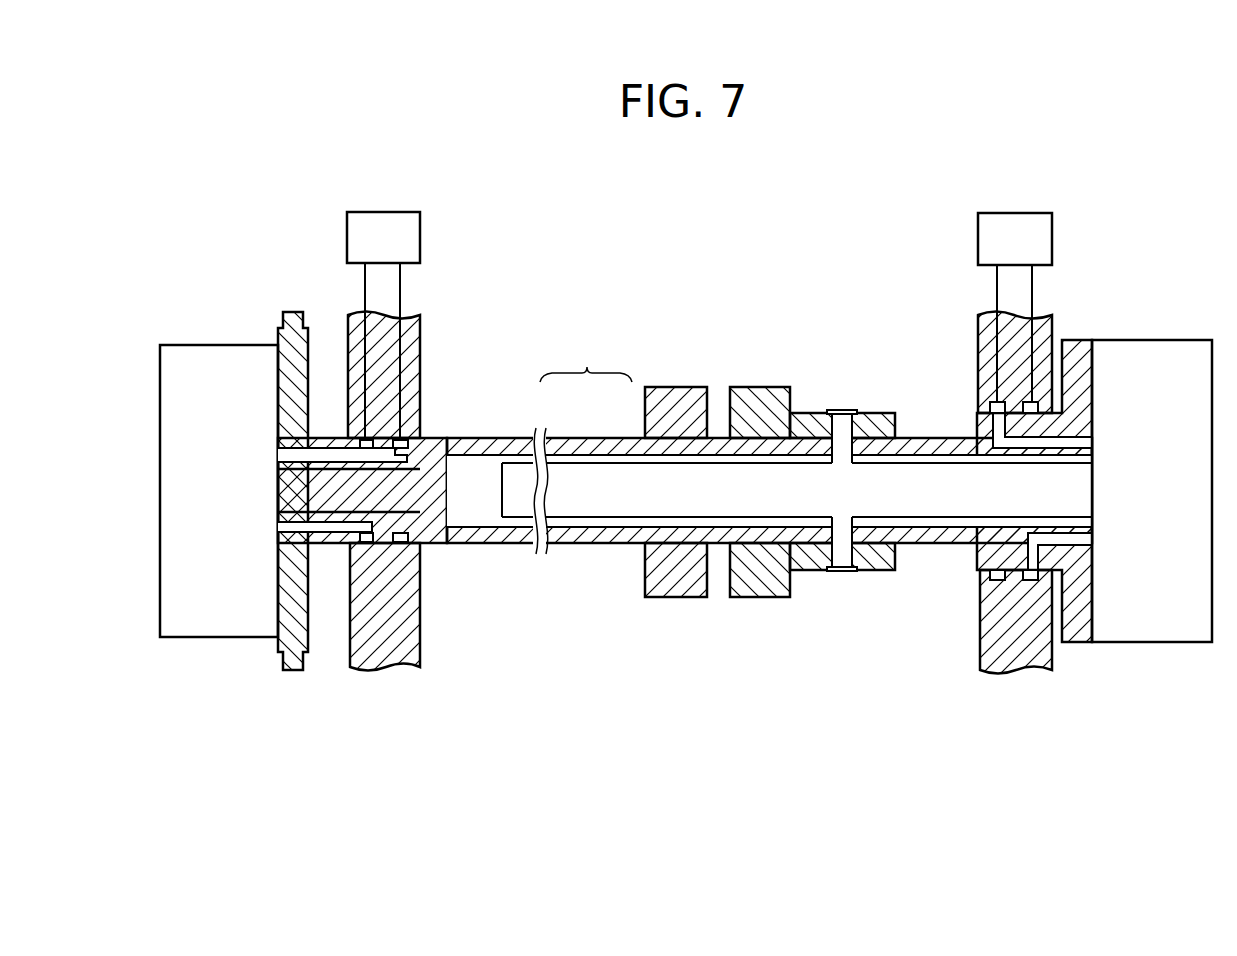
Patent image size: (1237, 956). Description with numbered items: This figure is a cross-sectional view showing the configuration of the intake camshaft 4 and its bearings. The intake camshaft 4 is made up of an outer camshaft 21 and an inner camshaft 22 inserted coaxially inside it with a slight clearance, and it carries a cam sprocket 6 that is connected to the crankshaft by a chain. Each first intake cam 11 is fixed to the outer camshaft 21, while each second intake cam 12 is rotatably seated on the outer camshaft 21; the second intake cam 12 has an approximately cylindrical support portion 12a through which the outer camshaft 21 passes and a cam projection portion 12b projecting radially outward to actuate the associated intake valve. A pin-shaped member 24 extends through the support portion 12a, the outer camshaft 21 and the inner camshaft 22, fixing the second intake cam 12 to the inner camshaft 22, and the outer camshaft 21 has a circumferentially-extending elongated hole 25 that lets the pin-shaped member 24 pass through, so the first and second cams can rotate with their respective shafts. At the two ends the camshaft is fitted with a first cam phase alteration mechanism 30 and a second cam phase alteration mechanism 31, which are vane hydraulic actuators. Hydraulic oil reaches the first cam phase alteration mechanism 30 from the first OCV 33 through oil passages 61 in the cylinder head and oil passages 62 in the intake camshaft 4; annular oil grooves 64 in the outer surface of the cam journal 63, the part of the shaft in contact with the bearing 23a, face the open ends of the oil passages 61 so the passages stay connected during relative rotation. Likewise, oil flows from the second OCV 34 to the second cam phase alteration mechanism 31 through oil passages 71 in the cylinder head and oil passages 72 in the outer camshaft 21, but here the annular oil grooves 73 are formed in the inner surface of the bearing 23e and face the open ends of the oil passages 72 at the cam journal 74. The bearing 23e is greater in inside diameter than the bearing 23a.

The intake camshaft 4 is at (586, 361).
The cam sprocket 6 is at (293, 322).
The first intake cam 11 is at (665, 398).
The second intake cam 12 is at (810, 408).
The support portion 12a is at (870, 413).
The cam projection portion 12b is at (757, 398).
The outer camshaft 21 is at (605, 448).
The inner camshaft 22 is at (563, 478).
The bearing 23a is at (412, 549).
The bearing 23e is at (983, 580).
The pin-shaped member 24 is at (838, 410).
The elongated hole 25 is at (845, 548).
The first cam phase alteration mechanism 30 is at (188, 358).
The second cam phase alteration mechanism 31 is at (1150, 355).
The first OCV 33 is at (370, 218).
The second OCV 34 is at (999, 220).
The oil passage 61 is at (367, 280).
The oil passage 62 is at (283, 453).
The cam journal 63 is at (408, 442).
The annular oil groove 64 is at (370, 438).
The oil passage 71 is at (1030, 282).
The oil passage 72 is at (1088, 439).
The annular oil groove 73 is at (1030, 402).
The cam journal 74 is at (990, 552).